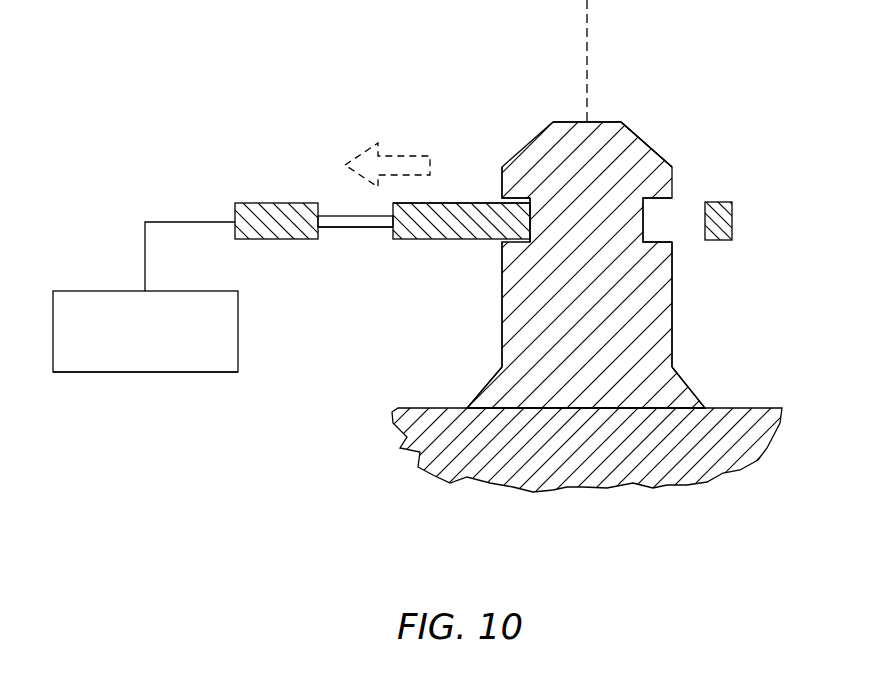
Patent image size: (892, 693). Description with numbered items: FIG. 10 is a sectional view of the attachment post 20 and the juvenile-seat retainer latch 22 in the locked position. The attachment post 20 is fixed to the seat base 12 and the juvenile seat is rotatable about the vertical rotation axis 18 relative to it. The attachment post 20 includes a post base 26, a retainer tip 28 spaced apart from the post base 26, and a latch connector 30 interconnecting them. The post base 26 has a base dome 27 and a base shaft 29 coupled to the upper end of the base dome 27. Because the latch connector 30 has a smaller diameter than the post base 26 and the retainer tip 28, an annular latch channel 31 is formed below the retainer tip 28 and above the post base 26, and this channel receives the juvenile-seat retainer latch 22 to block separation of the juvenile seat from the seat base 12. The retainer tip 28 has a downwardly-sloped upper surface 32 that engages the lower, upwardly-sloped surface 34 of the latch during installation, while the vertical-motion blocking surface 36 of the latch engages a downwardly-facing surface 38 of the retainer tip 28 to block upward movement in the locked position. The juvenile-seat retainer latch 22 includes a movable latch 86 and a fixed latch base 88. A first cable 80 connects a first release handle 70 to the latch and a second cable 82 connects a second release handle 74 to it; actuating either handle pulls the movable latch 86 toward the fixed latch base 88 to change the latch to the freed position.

The seat base 12 is at (563, 475).
The vertical rotation axis 18 is at (587, 8).
The attachment post 20 is at (608, 85).
The juvenile-seat retainer latch 22 is at (382, 182).
The post base 26 is at (515, 353).
The base dome 27 is at (688, 386).
The retainer tip 28 is at (630, 158).
The base shaft 29 is at (650, 335).
The latch connector 30 is at (552, 220).
The annular latch channel 31 is at (673, 215).
The downwardly-sloped upper surface 32 is at (667, 159).
The lower, upwardly-sloped surface 34 is at (530, 223).
The vertical-motion blocking surface 36 is at (470, 203).
The downwardly-facing surface 38 is at (520, 199).
The first release handle 70 is at (108, 373).
The second release handle 74 is at (203, 373).
The first cable 80 is at (365, 228).
The second cable 82 is at (380, 228).
The movable latch 86 is at (455, 203).
The fixed latch base 88 is at (307, 203).